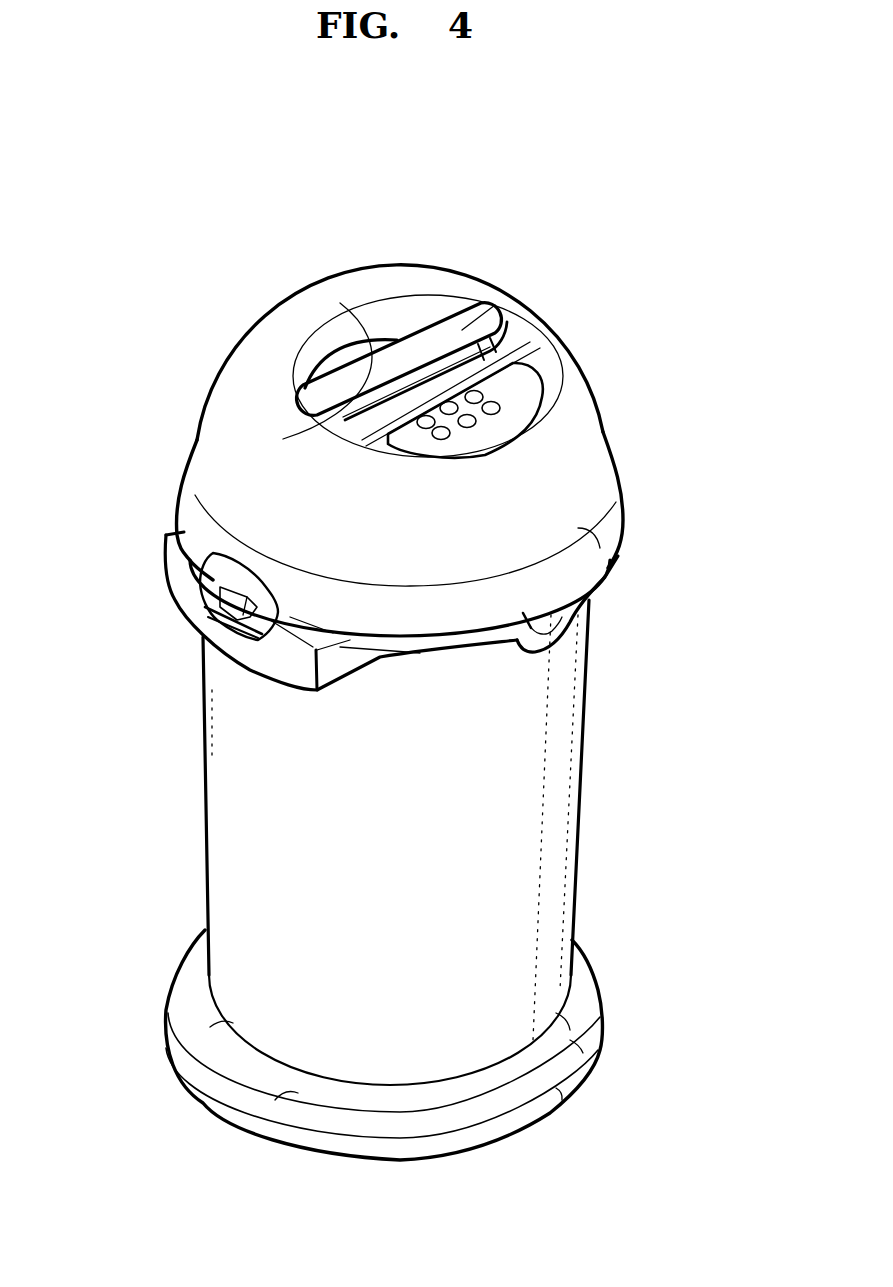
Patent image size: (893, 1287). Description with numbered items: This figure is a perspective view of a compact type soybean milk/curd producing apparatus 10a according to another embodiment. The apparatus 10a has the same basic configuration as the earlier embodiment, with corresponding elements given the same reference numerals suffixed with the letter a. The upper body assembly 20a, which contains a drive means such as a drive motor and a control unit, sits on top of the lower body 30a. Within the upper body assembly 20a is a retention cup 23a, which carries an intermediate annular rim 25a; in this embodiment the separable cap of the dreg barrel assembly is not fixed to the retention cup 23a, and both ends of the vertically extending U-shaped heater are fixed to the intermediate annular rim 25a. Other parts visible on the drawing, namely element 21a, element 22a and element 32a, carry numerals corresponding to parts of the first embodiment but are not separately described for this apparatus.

The soybean milk/curd producing apparatus 10a is at (486, 260).
The upper body assembly 20a is at (583, 364).
The dome cover 21a is at (573, 463).
The handle 22a is at (505, 301).
The retention cup 23a is at (217, 608).
The intermediate annular rim 25a is at (203, 578).
The lower body 30a is at (595, 715).
The base 32a is at (584, 1034).